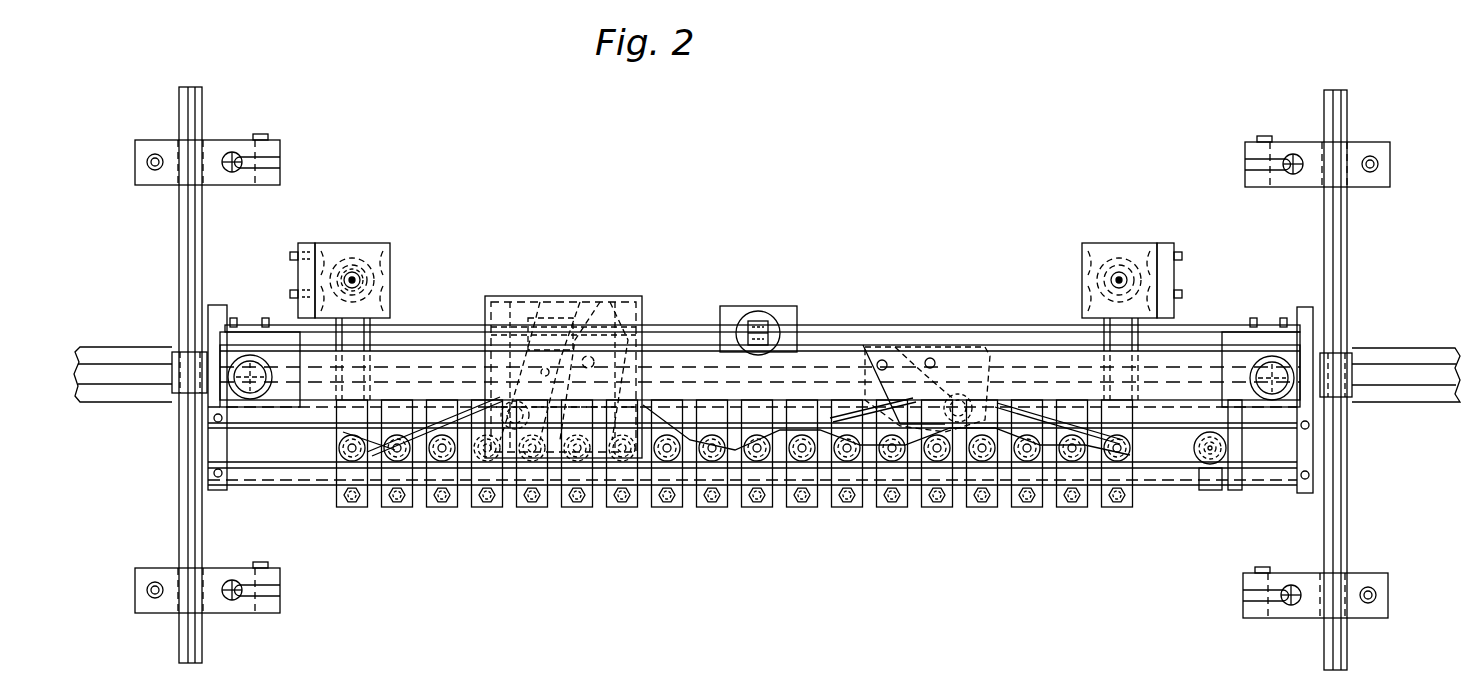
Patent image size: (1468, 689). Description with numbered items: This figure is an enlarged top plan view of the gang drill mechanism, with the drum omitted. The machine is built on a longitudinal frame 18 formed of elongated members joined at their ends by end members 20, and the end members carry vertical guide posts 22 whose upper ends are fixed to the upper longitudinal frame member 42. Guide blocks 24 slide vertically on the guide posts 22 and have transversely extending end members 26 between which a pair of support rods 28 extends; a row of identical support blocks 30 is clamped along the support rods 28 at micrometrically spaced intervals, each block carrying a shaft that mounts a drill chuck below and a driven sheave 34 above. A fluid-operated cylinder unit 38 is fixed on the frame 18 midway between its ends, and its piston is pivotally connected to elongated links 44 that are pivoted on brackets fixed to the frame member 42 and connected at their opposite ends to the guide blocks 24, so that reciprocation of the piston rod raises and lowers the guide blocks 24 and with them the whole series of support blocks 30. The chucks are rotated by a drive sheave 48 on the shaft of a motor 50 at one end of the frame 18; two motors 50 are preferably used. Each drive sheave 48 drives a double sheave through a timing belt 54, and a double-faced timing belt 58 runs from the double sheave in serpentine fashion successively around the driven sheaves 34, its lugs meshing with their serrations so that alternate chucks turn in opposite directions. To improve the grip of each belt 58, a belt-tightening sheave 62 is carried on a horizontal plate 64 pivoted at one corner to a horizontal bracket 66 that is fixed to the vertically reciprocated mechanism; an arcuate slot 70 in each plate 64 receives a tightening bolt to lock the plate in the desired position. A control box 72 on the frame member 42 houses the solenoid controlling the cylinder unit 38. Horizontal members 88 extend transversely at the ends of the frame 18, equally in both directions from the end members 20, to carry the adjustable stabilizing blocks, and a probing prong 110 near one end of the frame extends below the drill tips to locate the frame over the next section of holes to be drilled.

The longitudinal frame 18 is at (815, 322).
The end members 20 is at (176, 355).
The vertical guide posts 22 is at (262, 338).
The guide blocks 24 is at (252, 405).
The transversely extending end members 26 is at (215, 445).
The support rods 28 is at (303, 418).
The support blocks 30 is at (355, 507).
The driven sheaves 34 is at (398, 462).
The fluid-operated cylinder unit 38 is at (755, 306).
The upper longitudinal frame member 42 is at (1190, 360).
The elongated links 44 is at (672, 325).
The drive sheave 48 is at (368, 245).
The motor 50 is at (330, 262).
The timing belt 54 is at (378, 338).
The double-faced timing belt 58 is at (440, 400).
The belt-tightening sheave 62 is at (500, 505).
The horizontal plates 64 is at (590, 330).
The horizontal brackets 66 is at (612, 330).
The arcuate slot 70 is at (530, 330).
The control box 72 is at (518, 300).
The horizontal members 88 is at (1340, 240).
The probing prong 110 is at (1212, 465).